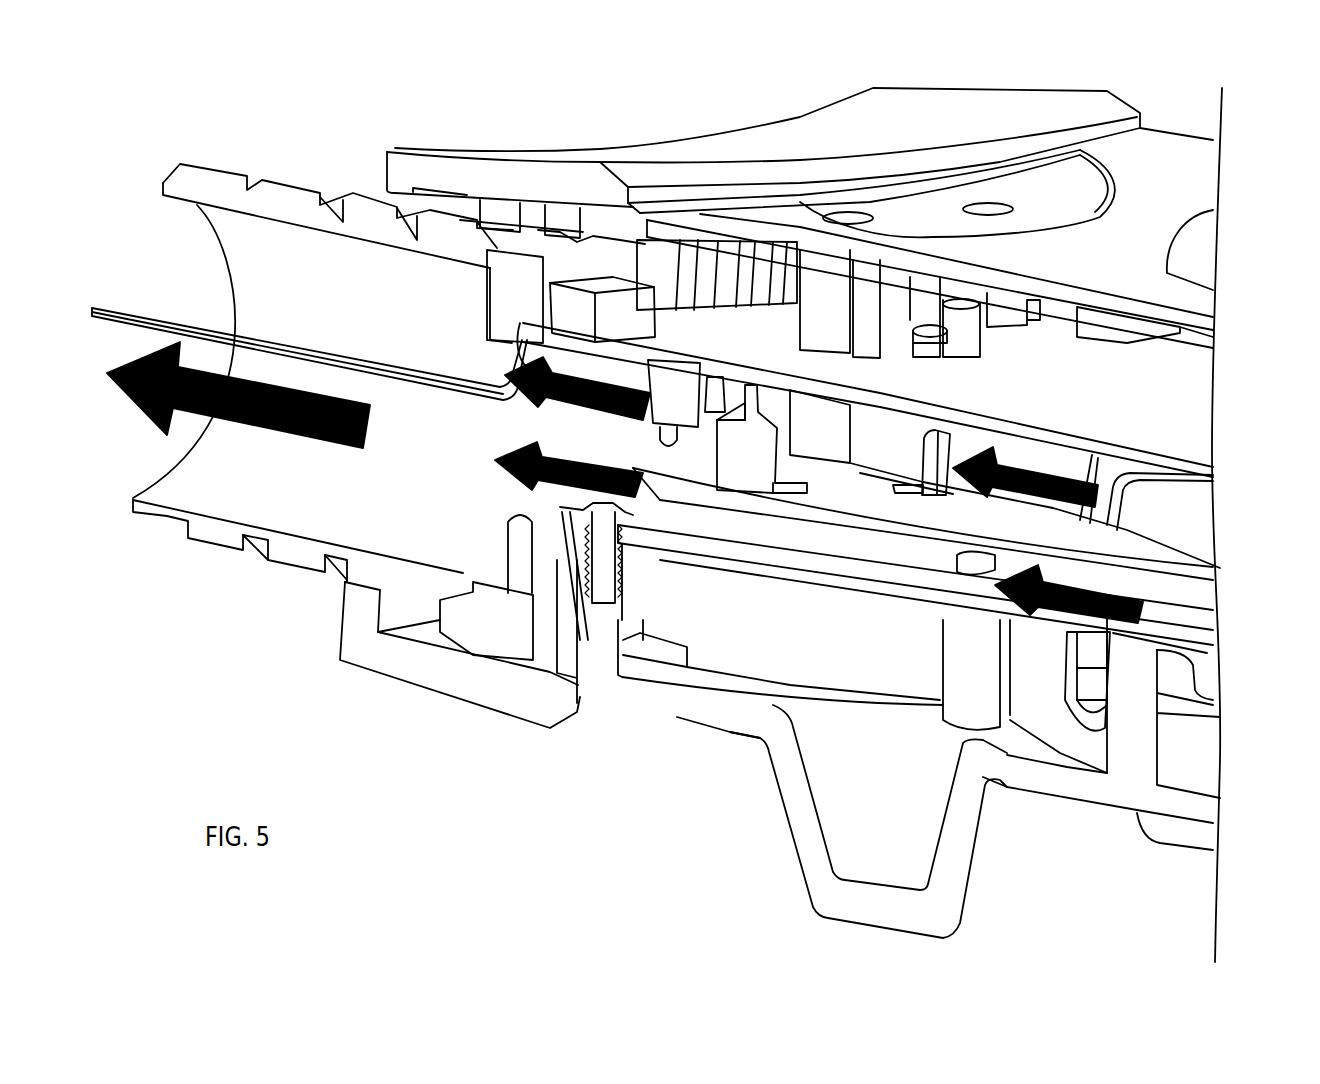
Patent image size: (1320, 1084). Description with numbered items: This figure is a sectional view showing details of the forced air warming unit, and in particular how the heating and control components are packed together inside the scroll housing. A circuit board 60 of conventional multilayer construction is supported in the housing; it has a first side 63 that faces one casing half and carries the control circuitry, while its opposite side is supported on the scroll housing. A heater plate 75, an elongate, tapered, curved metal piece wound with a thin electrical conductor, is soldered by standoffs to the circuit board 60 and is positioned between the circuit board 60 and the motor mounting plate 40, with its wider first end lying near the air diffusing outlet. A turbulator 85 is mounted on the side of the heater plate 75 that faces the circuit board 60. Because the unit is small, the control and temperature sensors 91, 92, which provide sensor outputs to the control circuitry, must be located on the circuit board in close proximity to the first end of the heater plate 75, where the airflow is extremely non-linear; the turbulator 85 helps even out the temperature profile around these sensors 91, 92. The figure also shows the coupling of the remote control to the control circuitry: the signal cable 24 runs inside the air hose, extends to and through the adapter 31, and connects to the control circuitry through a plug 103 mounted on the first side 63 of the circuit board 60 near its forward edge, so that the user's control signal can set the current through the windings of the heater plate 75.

The signal cable 24 is at (157, 306).
The adapter 31 is at (212, 537).
The motor mounting plate 40 is at (750, 560).
The circuit board 60 is at (1162, 412).
The first side 63 is at (703, 333).
The heater plate 75 is at (948, 521).
The turbulator 85 is at (853, 527).
The control and temperature sensor 91 is at (687, 417).
The control and temperature sensor 92 is at (712, 395).
The plug 103 is at (597, 283).